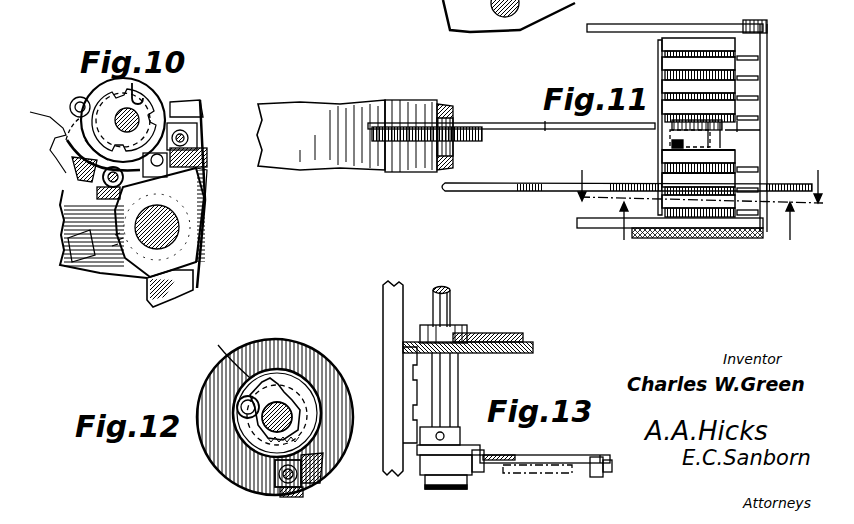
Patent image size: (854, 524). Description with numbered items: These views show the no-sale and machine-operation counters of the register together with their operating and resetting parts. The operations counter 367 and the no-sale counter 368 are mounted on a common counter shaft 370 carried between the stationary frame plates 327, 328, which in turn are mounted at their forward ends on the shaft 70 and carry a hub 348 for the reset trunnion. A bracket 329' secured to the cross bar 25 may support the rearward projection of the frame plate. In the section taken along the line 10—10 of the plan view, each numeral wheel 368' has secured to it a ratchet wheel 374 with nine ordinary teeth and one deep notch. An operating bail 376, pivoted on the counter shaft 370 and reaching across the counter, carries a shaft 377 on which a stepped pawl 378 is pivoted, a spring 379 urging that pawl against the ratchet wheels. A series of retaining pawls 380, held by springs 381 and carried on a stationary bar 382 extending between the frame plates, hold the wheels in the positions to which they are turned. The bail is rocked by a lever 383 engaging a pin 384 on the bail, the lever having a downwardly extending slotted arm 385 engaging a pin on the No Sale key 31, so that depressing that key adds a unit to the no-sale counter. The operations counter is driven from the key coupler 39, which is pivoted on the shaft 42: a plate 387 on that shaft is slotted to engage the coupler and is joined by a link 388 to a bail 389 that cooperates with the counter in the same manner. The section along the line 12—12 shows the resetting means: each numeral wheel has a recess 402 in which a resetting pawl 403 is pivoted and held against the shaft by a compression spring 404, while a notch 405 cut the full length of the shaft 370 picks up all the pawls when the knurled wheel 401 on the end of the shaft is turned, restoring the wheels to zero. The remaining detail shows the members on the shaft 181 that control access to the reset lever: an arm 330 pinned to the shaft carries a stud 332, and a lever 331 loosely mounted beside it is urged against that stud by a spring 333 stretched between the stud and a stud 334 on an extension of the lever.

In FIG. 11, the section line 10— 10 is at (706, 233).
In FIG. 11, the section line 12— 12 is at (695, 177).
In FIG. 13, the cross bar 25 is at (395, 318).
In FIG. 11, the No Sale key 31 is at (507, 188).
In FIG. 11, the key coupler 39 is at (321, 135).
In FIG. 11, the shaft 42 is at (452, 118).
In FIG. 10, the shaft 70 is at (180, 237).
In FIG. 13, the shaft 181 is at (443, 310).
In FIG. 10, the stationary frame plate 327 is at (201, 110).
In FIG. 11, the stationary frame plate 327 is at (727, 27).
In FIG. 13, the stationary frame plate 327 is at (517, 353).
In FIG. 11, the stationary frame plate 328 is at (592, 225).
In FIG. 12, the bracket 329' is at (360, 337).
In FIG. 13, the arm 330 is at (467, 445).
In FIG. 13, the lever 331 is at (577, 448).
In FIG. 13, the stud 332 is at (490, 455).
In FIG. 13, the spring 333 is at (546, 475).
In FIG. 13, the stud 334 is at (607, 467).
In FIG. 10, the hub 348 is at (70, 277).
In FIG. 11, the counter 367 is at (663, 60).
In FIG. 12, the counter 367 is at (307, 390).
In FIG. 11, the no-sale counter 368 is at (672, 160).
In FIG. 10, the numeral wheel 368' is at (147, 120).
In FIG. 10, the counter shaft 370 is at (143, 131).
In FIG. 12, the counter shaft 370 is at (247, 433).
In FIG. 10, the ratchet wheel 374 is at (105, 95).
In FIG. 10, the operating bail 376 is at (72, 247).
In FIG. 11, the operating bail 376 is at (672, 147).
In FIG. 12, the operating bail 376 is at (300, 500).
In FIG. 10, the shaft 377 is at (105, 190).
In FIG. 10, the stepped pawl 378 is at (103, 180).
In FIG. 12, the stepped pawl 378 is at (323, 477).
In FIG. 10, the spring 379 is at (80, 181).
In FIG. 10, the retaining pawl 380 is at (198, 143).
In FIG. 11, the retaining pawl 380 is at (748, 77).
In FIG. 10, the spring 381 is at (207, 172).
In FIG. 10, the stationary bar 382 is at (208, 160).
In FIG. 11, the stationary bar 382 is at (757, 47).
In FIG. 10, the lever 383 is at (159, 222).
In FIG. 10, the pin 384 is at (160, 165).
In FIG. 11, the pin 384 is at (737, 130).
In FIG. 10, the slotted arm 385 is at (194, 280).
In FIG. 11, the slotted arm 385 is at (660, 176).
In FIG. 11, the plate 387 is at (453, 143).
In FIG. 13, the plate 387 is at (477, 335).
In FIG. 11, the link 388 is at (511, 124).
In FIG. 11, the bail 389 is at (690, 38).
In FIG. 10, the knurled wheel 401 is at (95, 163).
In FIG. 11, the knurled wheel 401 is at (697, 236).
In FIG. 12, the knurled wheel 401 is at (270, 342).
In FIG. 10, the recess 402 is at (76, 100).
In FIG. 11, the recess 402 is at (673, 135).
In FIG. 12, the recess 402 is at (318, 400).
In FIG. 10, the resetting pawl 403 is at (50, 127).
In FIG. 12, the resetting pawl 403 is at (221, 354).
In FIG. 12, the compression spring 404 is at (225, 472).
In FIG. 10, the notch 405 is at (157, 97).